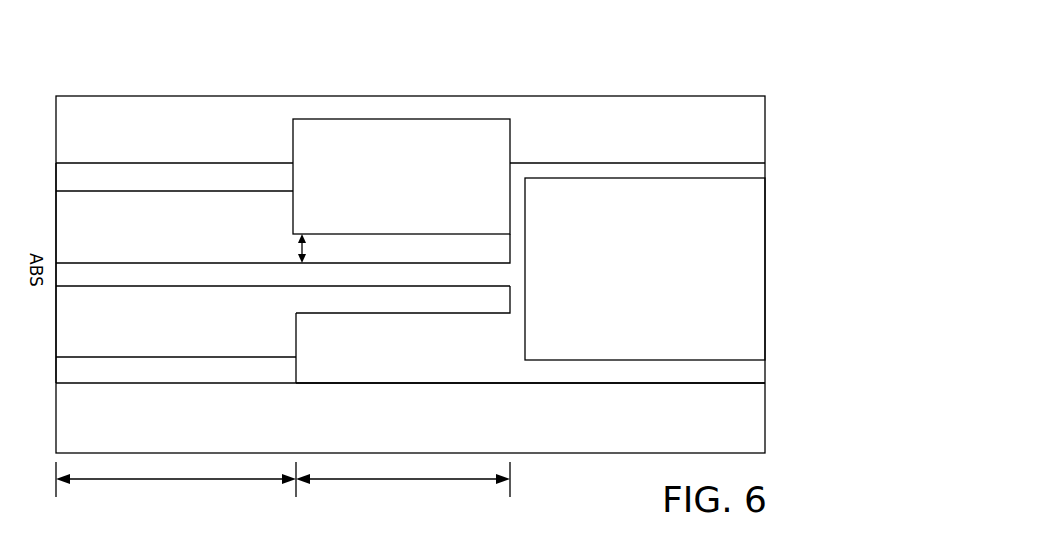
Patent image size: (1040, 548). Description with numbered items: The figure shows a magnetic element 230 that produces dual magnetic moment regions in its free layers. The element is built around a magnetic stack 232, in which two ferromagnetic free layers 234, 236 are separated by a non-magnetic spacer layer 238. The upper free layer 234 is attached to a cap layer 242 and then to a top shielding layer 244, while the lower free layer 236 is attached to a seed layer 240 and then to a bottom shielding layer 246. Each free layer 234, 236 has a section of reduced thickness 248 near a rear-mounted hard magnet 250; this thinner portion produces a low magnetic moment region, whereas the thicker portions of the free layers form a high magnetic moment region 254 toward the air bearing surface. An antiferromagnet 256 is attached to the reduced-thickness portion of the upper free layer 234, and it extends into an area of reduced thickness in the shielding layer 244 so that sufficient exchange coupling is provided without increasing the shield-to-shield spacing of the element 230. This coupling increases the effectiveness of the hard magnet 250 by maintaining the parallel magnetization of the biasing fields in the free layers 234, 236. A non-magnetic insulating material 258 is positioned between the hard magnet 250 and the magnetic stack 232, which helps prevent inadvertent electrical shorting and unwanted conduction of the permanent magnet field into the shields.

The magnetic element 230 is at (109, 60).
The magnetic stack 232 is at (48, 357).
The ferromagnetic free layer 234 is at (283, 241).
The ferromagnetic free layer 236 is at (314, 306).
The non-magnetic spacer layer 238 is at (283, 275).
The seed layer 240 is at (176, 368).
The cap layer 242 is at (174, 179).
The shielding layer 244 is at (410, 131).
The shielding layer 246 is at (410, 415).
The section of reduced thickness 248 is at (287, 248).
The hard magnet 250 is at (645, 269).
The high magnetic moment region 254 is at (176, 482).
The antiferromagnet (AFM) 256 is at (401, 310).
The non-magnetic insulating material 258 is at (530, 348).